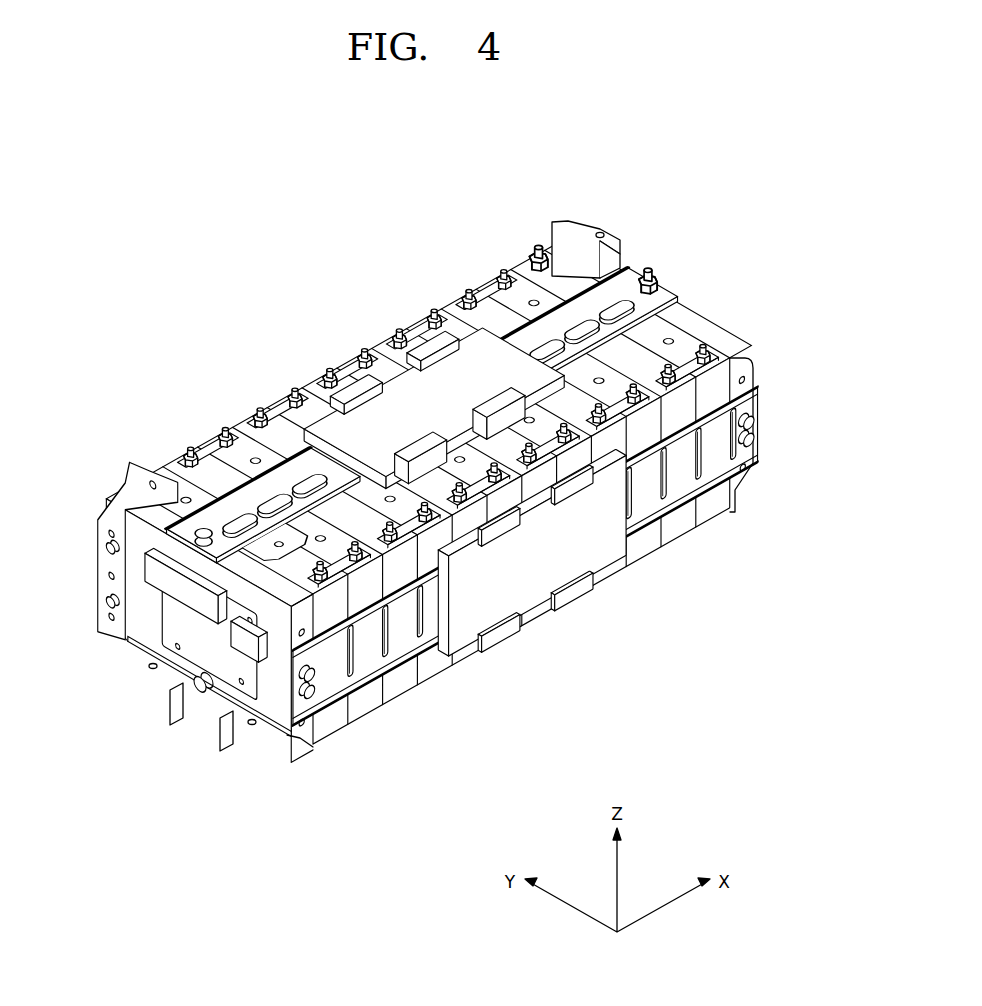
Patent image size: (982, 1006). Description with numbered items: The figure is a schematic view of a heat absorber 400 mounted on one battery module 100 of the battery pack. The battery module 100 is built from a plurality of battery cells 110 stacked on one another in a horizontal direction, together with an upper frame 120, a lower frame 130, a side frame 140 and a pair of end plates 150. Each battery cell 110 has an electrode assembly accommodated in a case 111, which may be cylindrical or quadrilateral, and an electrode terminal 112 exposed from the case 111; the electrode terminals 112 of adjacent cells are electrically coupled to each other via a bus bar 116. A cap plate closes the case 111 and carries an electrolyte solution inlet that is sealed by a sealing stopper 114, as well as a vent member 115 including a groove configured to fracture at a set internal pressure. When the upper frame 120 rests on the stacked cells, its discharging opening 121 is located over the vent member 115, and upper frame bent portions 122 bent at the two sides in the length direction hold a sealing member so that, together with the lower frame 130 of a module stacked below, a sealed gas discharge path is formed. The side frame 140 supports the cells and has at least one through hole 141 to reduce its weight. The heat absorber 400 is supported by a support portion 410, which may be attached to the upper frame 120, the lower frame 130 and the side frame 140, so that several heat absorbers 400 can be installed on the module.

The battery module 100 is at (434, 498).
The battery cell 110 is at (434, 498).
The case 111 is at (368, 700).
The electrode terminal 112 is at (188, 455).
The sealing stopper 114 is at (527, 296).
The vent member 115 is at (263, 491).
The bus bar 116 is at (413, 325).
The upper frame 120 is at (604, 282).
The discharging opening 121 is at (633, 277).
The upper frame bent portion 122 is at (566, 272).
The lower frame 130 is at (232, 736).
The side frame 140 is at (537, 556).
The through hole 141 is at (680, 487).
The end plate 150 is at (188, 657).
The heat absorber 400 is at (459, 488).
The support portion 410 is at (348, 395).